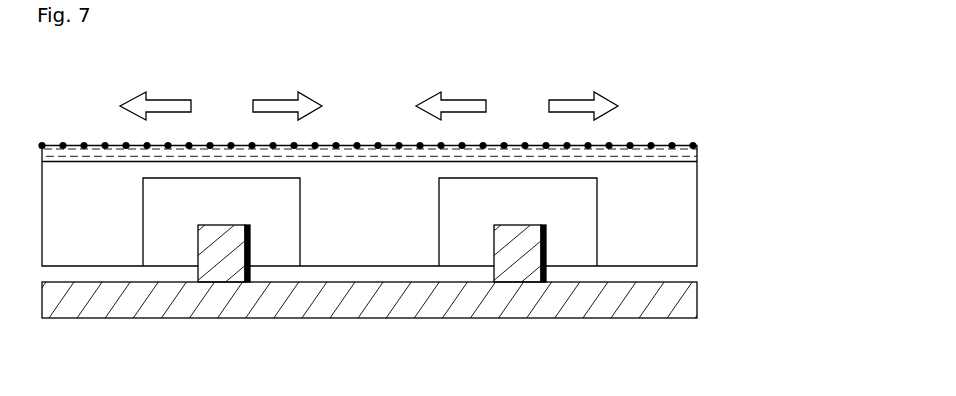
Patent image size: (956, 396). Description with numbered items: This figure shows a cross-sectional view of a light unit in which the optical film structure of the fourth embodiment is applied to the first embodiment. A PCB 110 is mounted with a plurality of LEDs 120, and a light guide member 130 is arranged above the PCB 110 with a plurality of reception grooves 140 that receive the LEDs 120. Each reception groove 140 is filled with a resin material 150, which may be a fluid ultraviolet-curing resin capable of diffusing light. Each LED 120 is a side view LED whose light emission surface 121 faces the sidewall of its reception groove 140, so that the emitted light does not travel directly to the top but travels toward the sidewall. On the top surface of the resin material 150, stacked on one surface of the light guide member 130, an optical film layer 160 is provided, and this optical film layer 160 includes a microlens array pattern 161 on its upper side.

The PCB 110 is at (697, 300).
The LED 120 is at (507, 267).
The light emission surface 121 is at (547, 263).
The light guide member 130 is at (697, 225).
The reception groove 140 is at (597, 207).
The resin material 150 is at (575, 193).
The optical film layer 160 is at (688, 154).
The microlens array pattern 161 is at (695, 142).